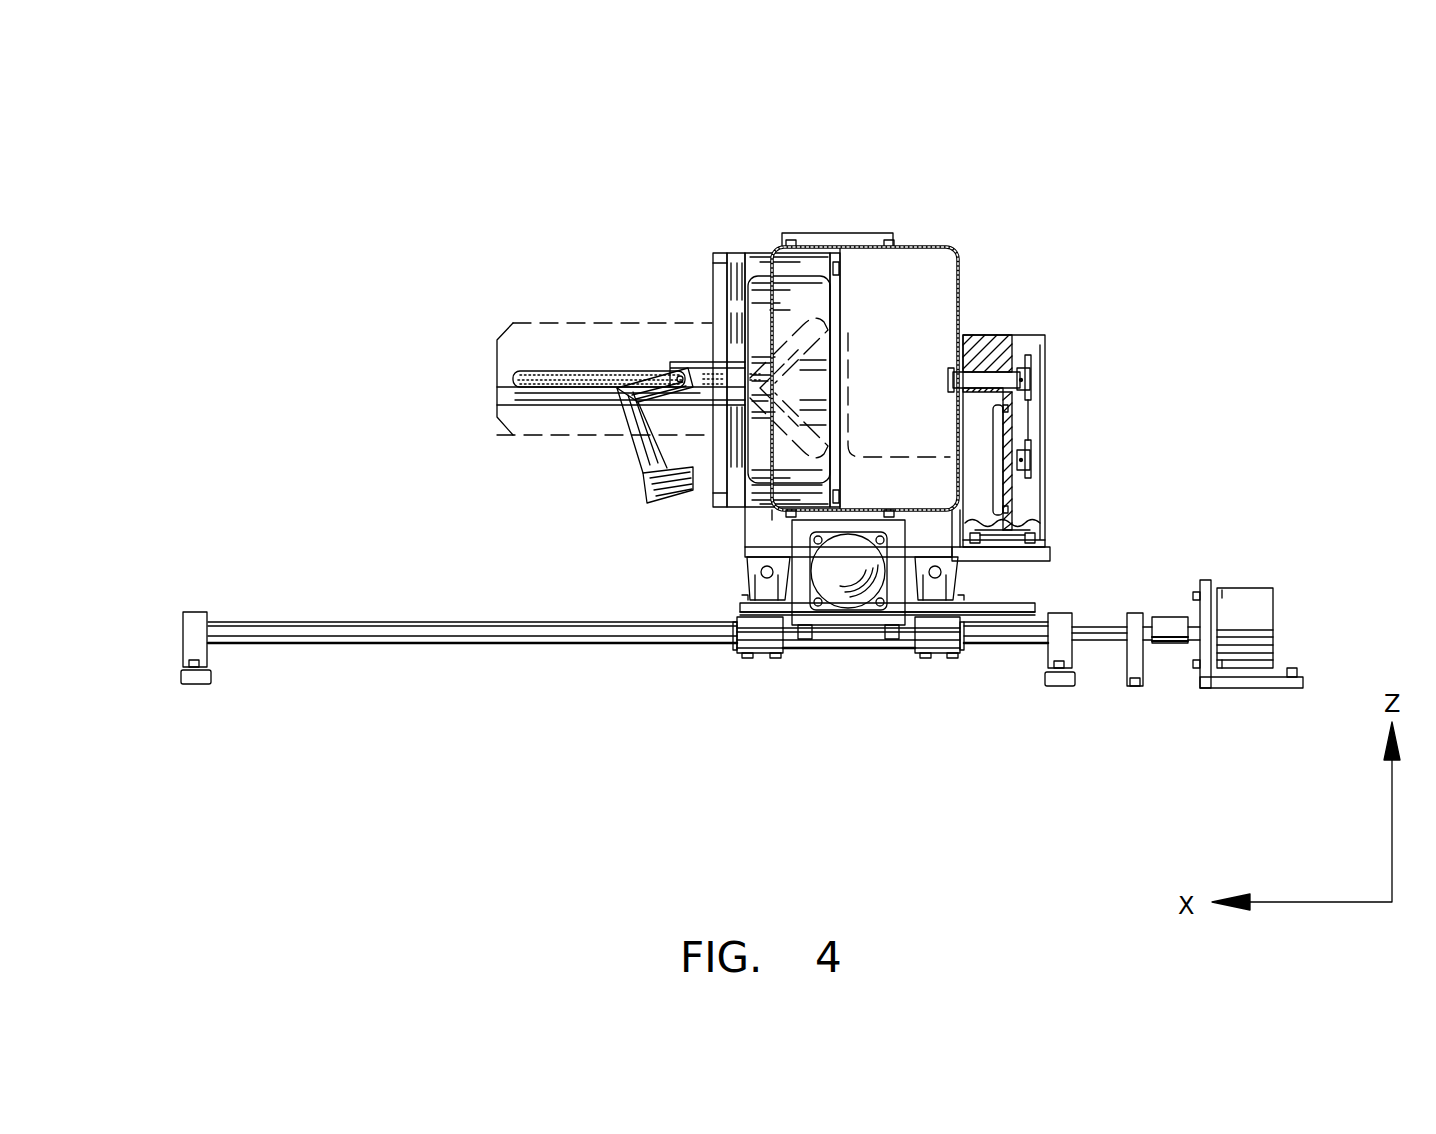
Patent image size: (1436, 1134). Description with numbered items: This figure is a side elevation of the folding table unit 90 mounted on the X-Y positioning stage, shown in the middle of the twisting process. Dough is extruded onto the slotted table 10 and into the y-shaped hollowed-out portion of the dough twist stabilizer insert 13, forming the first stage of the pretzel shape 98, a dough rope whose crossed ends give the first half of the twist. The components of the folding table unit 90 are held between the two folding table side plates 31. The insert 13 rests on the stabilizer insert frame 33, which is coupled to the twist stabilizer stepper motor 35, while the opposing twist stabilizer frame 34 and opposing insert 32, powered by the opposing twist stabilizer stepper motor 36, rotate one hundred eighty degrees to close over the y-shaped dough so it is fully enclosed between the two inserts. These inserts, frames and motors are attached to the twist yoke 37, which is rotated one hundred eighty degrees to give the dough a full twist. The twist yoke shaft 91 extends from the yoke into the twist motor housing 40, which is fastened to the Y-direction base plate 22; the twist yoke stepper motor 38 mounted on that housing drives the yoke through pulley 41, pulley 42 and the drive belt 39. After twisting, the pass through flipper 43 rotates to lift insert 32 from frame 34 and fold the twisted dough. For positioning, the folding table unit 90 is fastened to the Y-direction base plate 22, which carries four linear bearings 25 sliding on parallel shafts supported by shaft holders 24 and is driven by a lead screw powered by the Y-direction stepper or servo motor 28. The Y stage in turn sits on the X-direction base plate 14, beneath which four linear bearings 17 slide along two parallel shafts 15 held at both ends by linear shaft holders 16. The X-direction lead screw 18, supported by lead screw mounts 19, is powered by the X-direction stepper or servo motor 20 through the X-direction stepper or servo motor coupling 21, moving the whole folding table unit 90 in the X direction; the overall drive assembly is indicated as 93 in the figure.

The slotted table 10 is at (527, 398).
The dough twist stabilizer insert 13 is at (720, 292).
The X-direction base plate 14 is at (968, 617).
The parallel shafts 15 is at (333, 630).
The linear shaft holders 16 is at (192, 630).
The linear bearings 17 is at (760, 637).
The X-direction lead screw 18 is at (1100, 632).
The lead screw mounts 19 is at (1140, 658).
The X-direction stepper or servo motor 20 is at (1248, 613).
The X-direction stepper or servo motor coupling 21 is at (1167, 623).
The Y-direction base plate 22 is at (1035, 556).
The shaft holders 24 is at (980, 602).
The linear bearings 25 is at (747, 574).
The Y-direction stepper or servo motor 28 is at (849, 577).
The folding table side plates 31 is at (552, 340).
The opposing stabilizer insert 32 is at (788, 297).
The stabilizer insert frame 33 is at (717, 256).
The opposing twist stabilizer frame 34 is at (735, 267).
The twist stabilizer stepper motor 35 is at (835, 240).
The opposing twist stabilizer stepper motor 36 is at (762, 555).
The twist yoke 37 is at (957, 250).
The twist yoke stepper motor 38 is at (998, 494).
The drive belt 39 is at (1030, 415).
The twist motor housing 40 is at (993, 335).
The pulley 41 is at (1025, 456).
The pulley 42 is at (1040, 375).
The pass through flipper 43 is at (645, 474).
The folding table unit 90 is at (932, 228).
The twist yoke shaft 91 is at (995, 380).
The linear drive assembly 93 is at (680, 662).
The first stage of the pretzel shape 98 is at (515, 378).